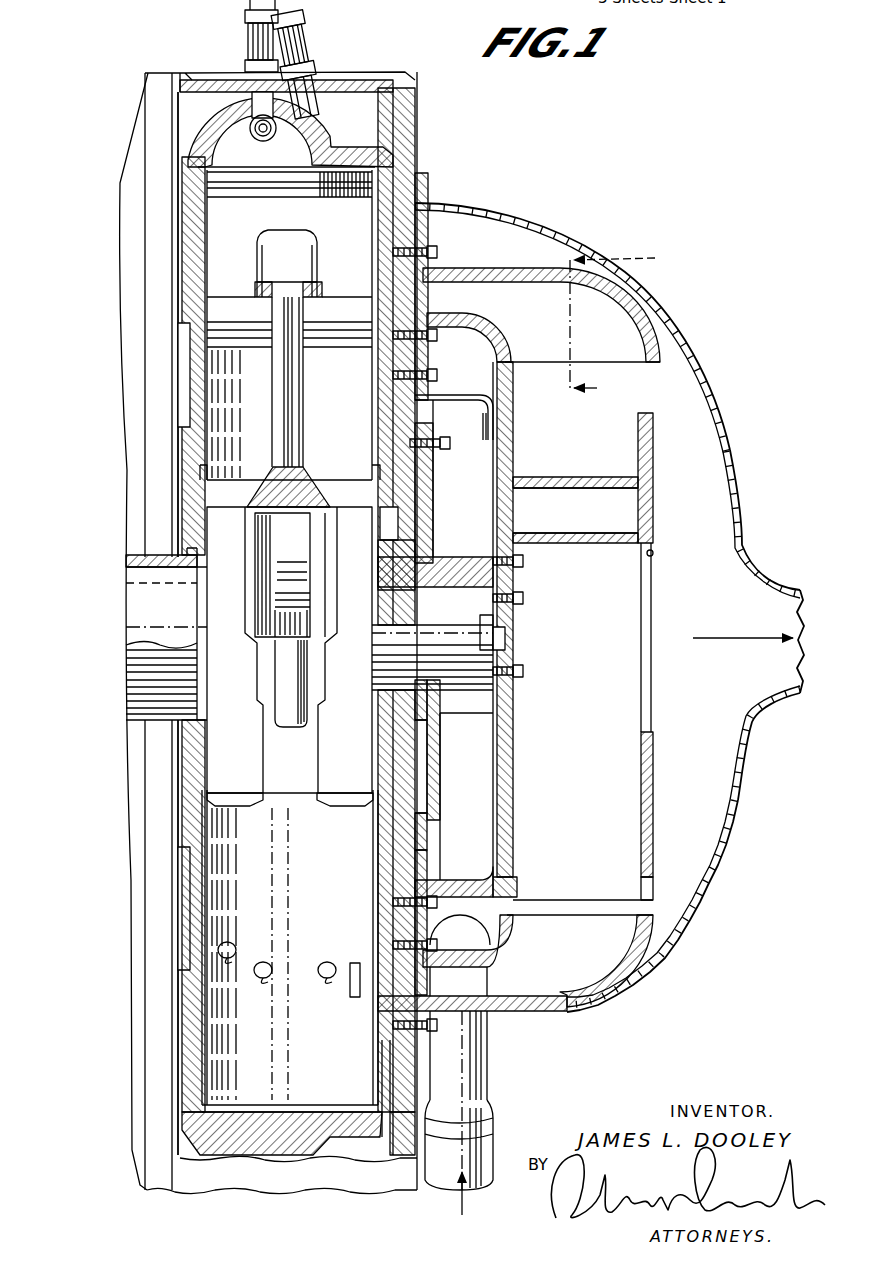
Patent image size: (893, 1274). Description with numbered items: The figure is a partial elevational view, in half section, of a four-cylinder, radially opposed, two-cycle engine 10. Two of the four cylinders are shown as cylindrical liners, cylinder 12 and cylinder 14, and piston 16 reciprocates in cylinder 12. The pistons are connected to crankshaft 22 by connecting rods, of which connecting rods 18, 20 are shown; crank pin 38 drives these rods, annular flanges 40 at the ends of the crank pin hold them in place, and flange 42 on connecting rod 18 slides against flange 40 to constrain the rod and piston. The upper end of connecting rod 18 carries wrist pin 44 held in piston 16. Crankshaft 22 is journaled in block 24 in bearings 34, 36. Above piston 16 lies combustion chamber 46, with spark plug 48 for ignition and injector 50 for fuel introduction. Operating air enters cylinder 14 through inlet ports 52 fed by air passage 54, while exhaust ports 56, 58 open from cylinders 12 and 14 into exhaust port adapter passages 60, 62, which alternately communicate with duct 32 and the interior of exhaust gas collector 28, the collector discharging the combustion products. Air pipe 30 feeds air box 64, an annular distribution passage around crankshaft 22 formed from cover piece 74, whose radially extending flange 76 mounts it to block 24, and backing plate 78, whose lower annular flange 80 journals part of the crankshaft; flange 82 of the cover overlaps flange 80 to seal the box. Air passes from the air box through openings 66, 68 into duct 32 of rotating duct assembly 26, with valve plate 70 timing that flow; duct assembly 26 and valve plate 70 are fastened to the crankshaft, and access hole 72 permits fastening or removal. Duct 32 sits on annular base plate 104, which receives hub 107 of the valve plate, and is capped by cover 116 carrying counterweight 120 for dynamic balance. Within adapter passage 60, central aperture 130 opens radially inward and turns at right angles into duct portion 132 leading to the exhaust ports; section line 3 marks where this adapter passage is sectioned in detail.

The section line 3- 3 is at (620, 321).
The engine 10 is at (534, 143).
The cylinder 12 is at (252, 394).
The cylinder 14 is at (205, 880).
The piston 16 is at (215, 217).
The connecting rod 18 is at (278, 415).
The connecting rod 20 is at (296, 686).
The crankshaft 22 is at (140, 612).
The block 24 is at (166, 517).
The duct assembly 26 is at (657, 490).
The exhaust gas collector 28 is at (744, 813).
The air pipe 30 is at (493, 1133).
The duct 32 is at (637, 505).
The bearing 34 is at (127, 550).
The bearing 36 is at (413, 582).
The crank pin 38 is at (312, 612).
The annular flanges 40 is at (255, 478).
The flange 42 is at (303, 470).
The wrist pin 44 is at (264, 245).
The combustion chamber 46 is at (223, 157).
The spark plug 48 is at (310, 63).
The injector 50 is at (248, 38).
The inlet ports 52 is at (232, 960).
The air passage 54 is at (182, 355).
The exhaust port 56 is at (380, 292).
The exhaust port 58 is at (355, 990).
The exhaust port adapter passage 60 is at (517, 266).
The exhaust port adapter passage 62 is at (604, 975).
The air box 64 is at (494, 849).
The opening 66 is at (485, 433).
The opening 68 is at (490, 740).
The valve plate 70 is at (557, 475).
The access hole 72 is at (695, 566).
The cover piece 74 is at (462, 397).
The radially extending flange 76 is at (433, 387).
The backing plate 78 is at (440, 495).
The lower annular flange 80 is at (443, 570).
The flange 82 is at (513, 730).
The annular base plate 104 is at (513, 770).
The hub 107 is at (513, 618).
The cover 116 is at (653, 787).
The counterweight 120 is at (650, 425).
The central aperture 130 is at (633, 364).
The duct portion 132 is at (462, 282).